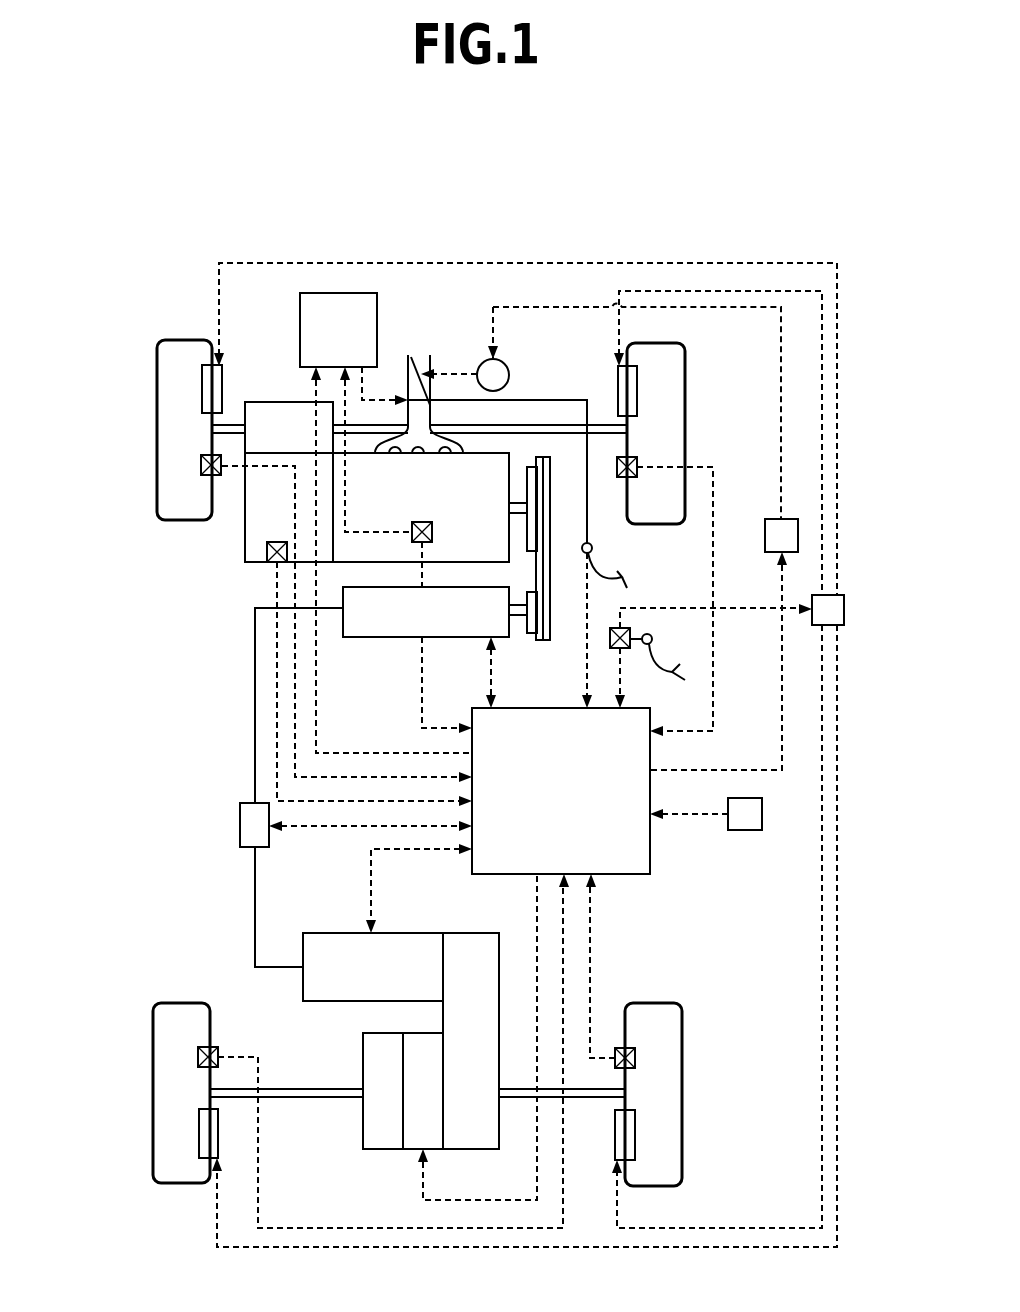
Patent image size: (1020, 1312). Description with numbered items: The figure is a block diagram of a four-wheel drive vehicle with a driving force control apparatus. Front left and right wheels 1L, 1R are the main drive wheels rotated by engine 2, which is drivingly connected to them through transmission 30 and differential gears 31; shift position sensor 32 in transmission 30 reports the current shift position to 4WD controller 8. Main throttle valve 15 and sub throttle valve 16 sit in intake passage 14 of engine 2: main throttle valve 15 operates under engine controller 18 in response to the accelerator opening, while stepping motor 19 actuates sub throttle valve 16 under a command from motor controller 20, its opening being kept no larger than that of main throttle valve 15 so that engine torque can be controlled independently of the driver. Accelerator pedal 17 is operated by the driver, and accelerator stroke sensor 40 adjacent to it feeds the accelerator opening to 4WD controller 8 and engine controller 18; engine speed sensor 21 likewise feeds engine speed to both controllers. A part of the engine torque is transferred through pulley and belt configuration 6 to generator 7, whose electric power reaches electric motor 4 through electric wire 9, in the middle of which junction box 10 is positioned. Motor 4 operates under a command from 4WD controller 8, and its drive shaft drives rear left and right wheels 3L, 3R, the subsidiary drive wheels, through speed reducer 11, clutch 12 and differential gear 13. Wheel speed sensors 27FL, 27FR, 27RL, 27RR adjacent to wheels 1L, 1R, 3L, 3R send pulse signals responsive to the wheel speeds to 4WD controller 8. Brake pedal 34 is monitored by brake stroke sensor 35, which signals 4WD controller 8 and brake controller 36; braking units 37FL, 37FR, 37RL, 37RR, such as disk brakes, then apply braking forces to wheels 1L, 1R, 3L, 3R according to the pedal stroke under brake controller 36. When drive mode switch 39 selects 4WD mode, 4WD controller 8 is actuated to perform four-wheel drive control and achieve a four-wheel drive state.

The front left wheel 1L is at (157, 388).
The front right wheel 1R is at (686, 393).
The engine 2 is at (352, 548).
The rear left wheel 3L is at (153, 1027).
The rear right wheel 3R is at (684, 1030).
The electric motor 4 is at (331, 992).
The pulley and belt configuration 6 is at (548, 563).
The electric generator 7 is at (397, 623).
The 4WD controller 8 is at (636, 855).
The electric wire 9 is at (255, 700).
The junction box 10 is at (240, 824).
The speed reducer 11 is at (477, 1143).
The clutch 12 is at (413, 1140).
The differential gear 13 is at (371, 1150).
The intake passage 14 is at (411, 353).
The main throttle valve 15 is at (428, 408).
The sub throttle valve 16 is at (425, 370).
The accelerator pedal 17 is at (632, 582).
The engine controller 18 is at (300, 312).
The stepping motor 19 is at (510, 375).
The motor controller 20 is at (800, 536).
The engine speed sensor 21 is at (434, 532).
The wheel speed sensor 27FL is at (201, 466).
The wheel speed sensor 27FR is at (638, 466).
The wheel speed sensor 27RL is at (198, 1058).
The wheel speed sensor 27RR is at (637, 1058).
The transmission 30 is at (261, 508).
The differential gears 31 is at (260, 408).
The shift position sensor 32 is at (265, 565).
The brake pedal 34 is at (673, 667).
The brake stroke sensor 35 is at (641, 678).
The brake controller 36 is at (846, 610).
The braking unit 37FL is at (200, 385).
The braking unit 37FR is at (638, 392).
The braking unit 37RL is at (198, 1132).
The braking unit 37RR is at (637, 1135).
The drive mode switch 39 is at (745, 831).
The accelerator stroke sensor 40 is at (593, 547).